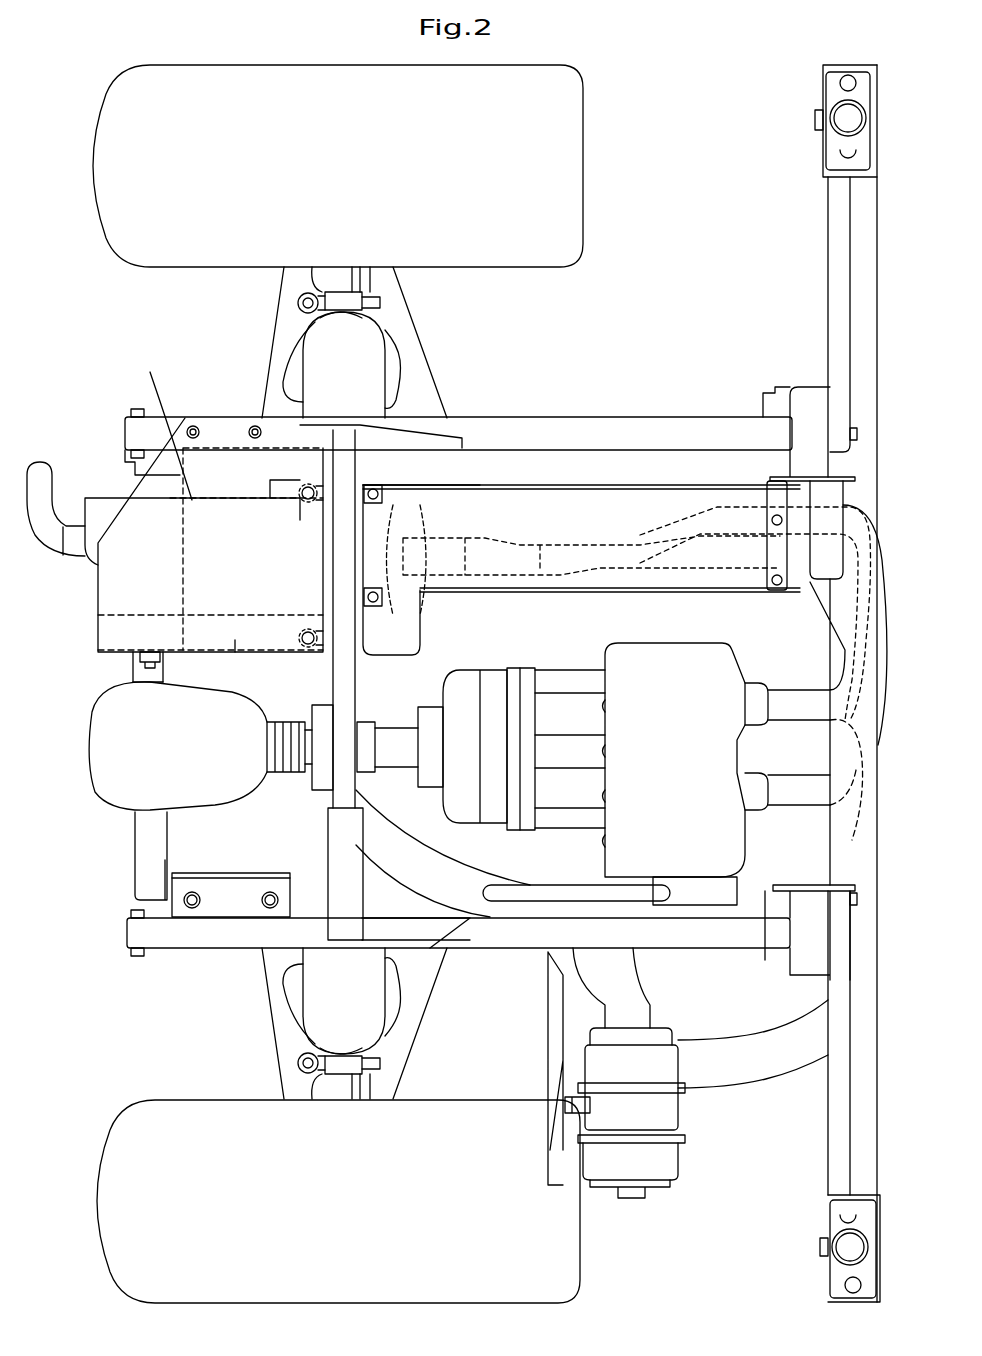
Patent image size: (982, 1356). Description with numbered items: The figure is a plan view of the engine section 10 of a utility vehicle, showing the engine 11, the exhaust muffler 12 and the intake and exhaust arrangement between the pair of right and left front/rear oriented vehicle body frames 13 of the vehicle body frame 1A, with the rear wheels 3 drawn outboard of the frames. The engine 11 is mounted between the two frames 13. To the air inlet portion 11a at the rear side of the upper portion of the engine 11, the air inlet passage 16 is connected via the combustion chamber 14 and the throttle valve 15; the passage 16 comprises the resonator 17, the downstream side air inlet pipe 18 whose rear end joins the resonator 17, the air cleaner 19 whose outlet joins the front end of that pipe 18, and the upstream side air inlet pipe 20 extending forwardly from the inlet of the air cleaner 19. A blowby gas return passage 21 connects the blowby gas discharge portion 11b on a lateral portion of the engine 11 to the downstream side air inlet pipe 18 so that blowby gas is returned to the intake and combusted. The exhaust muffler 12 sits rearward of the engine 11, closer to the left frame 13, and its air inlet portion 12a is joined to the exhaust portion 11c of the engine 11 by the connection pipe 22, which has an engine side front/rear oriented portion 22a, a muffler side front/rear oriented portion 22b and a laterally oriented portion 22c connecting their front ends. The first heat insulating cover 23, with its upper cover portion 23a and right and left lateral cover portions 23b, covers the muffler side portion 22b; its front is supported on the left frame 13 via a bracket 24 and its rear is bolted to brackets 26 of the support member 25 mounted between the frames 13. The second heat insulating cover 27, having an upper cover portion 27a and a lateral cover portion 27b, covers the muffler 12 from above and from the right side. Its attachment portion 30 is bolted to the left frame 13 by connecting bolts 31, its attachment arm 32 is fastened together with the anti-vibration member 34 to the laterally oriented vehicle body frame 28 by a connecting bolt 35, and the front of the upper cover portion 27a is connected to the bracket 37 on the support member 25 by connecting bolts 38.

The vehicle body frame 1A is at (120, 958).
The rear wheels 3 is at (590, 165).
The engine section 10 is at (645, 338).
The engine 11 is at (618, 655).
The air inlet portion 11a is at (600, 712).
The blowby gas discharge portion 11b is at (690, 880).
The exhaust portion 11c is at (748, 703).
The exhaust muffler 12 is at (100, 512).
The air inlet portion 12a is at (440, 545).
The front/rear oriented vehicle body frames 13 is at (544, 417).
The combustion chamber 14 is at (455, 680).
The throttle valve 15 is at (318, 790).
The air inlet passage 16 is at (716, 1176).
The resonator 17 is at (95, 752).
The downstream side air inlet pipe 18 is at (470, 870).
The air cleaner 19 is at (668, 1112).
The upstream side air inlet pipe 20 is at (738, 1050).
The blowby gas return passage 21 is at (585, 890).
The connection pipe 22 is at (688, 572).
The engine side front/rear oriented portion 22a is at (804, 712).
The muffler side front/rear oriented portion 22b is at (600, 545).
The laterally oriented portion 22c is at (848, 650).
The first heat insulating cover 23 is at (619, 470).
The upper cover portion 23a is at (670, 490).
The lateral cover portions 23b is at (523, 480).
The bracket 24 is at (770, 478).
The support member 25 is at (352, 780).
The brackets 26 is at (374, 486).
The second heat insulating cover 27 is at (97, 562).
The upper cover portion 27a is at (152, 425).
The lateral cover portion 27b is at (235, 653).
The laterally oriented vehicle body frame 28 is at (145, 832).
The attachment portion 30 is at (222, 430).
The connecting bolts 31 is at (193, 426).
The attachment arm 32 is at (156, 668).
The anti-vibration member 34 is at (133, 662).
The connecting bolt 35 is at (146, 668).
The bracket 37 is at (298, 490).
The connecting bolts 38 is at (304, 502).